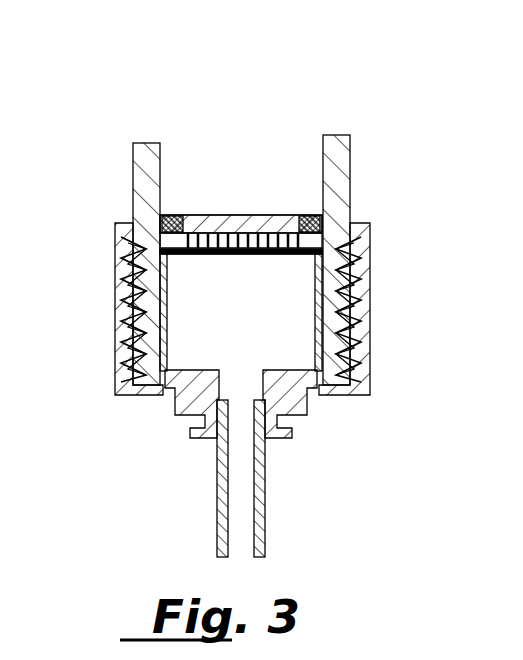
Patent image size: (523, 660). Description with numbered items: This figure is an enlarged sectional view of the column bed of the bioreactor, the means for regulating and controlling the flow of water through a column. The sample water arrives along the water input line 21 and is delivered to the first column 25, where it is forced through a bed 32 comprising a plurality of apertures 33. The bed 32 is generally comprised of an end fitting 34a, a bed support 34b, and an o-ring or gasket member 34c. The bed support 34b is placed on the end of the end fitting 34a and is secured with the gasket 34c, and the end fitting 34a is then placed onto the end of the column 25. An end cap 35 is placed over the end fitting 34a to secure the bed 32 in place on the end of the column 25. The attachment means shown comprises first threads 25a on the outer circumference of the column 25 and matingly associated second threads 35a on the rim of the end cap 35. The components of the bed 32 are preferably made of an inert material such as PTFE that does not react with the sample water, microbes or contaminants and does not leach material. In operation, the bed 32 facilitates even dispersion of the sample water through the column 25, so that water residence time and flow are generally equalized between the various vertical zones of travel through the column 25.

The water input line 21 is at (217, 482).
The first column 25 is at (349, 178).
The first threads 25a is at (128, 327).
The bed 32 is at (240, 285).
The apertures 33 is at (235, 245).
The end fitting 34a is at (280, 440).
The bed support 34b is at (200, 237).
The gasket member 34c is at (188, 218).
The end cap 35 is at (364, 368).
The second threads 35a is at (123, 275).